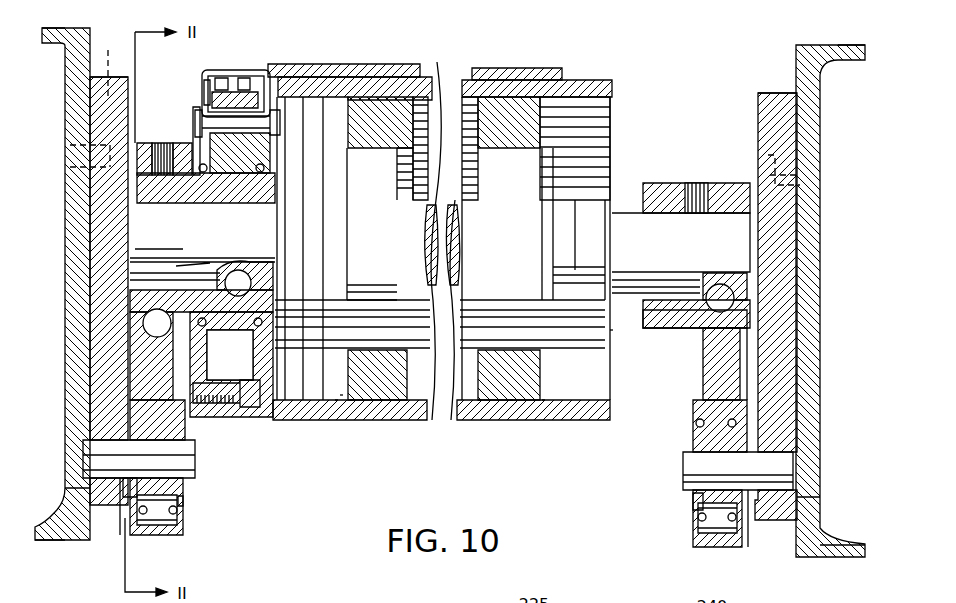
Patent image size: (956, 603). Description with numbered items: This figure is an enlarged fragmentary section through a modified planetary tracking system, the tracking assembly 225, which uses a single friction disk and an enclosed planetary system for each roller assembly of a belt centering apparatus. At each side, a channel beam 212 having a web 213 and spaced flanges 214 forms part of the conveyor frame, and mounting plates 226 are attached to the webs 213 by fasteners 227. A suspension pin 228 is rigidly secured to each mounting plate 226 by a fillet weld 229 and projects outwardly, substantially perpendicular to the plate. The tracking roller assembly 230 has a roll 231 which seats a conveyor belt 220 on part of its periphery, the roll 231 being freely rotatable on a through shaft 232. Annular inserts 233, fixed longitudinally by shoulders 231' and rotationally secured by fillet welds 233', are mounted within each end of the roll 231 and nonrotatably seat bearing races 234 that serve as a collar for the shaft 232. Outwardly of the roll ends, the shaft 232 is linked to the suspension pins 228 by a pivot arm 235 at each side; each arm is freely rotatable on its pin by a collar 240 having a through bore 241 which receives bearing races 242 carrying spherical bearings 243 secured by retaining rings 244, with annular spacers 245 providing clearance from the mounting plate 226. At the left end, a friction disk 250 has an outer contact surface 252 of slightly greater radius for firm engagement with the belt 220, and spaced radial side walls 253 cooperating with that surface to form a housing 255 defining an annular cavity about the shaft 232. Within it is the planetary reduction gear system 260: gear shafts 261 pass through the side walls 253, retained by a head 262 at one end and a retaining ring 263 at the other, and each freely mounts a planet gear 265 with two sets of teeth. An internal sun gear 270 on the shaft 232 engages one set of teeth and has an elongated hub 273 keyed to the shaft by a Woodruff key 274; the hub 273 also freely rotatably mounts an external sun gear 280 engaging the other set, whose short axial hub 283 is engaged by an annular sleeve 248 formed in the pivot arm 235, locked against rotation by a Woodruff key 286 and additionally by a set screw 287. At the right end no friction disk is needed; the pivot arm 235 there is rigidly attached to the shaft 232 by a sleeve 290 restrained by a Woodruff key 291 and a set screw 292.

The channel beam 212 is at (58, 30).
The web 213 is at (84, 278).
The flanges 214 is at (55, 40).
The conveyor belt 220 is at (372, 70).
The tracking assembly 225 is at (661, 98).
The mounting plate 226 is at (120, 80).
The fasteners 227 is at (768, 158).
The suspension pin 228 is at (196, 460).
The fillet weld 229 is at (80, 535).
The tracking roller assembly 230 is at (304, 46).
The roll 231 is at (534, 225).
The shoulders 231' is at (418, 428).
The through shaft 232 is at (440, 90).
The annular inserts 233 is at (431, 436).
The fillet welds 233' is at (450, 442).
The bearing races 234 is at (575, 340).
The pivot arm 235 is at (150, 360).
The collar 240 is at (173, 538).
The through bore 241 is at (162, 520).
The bearing races 242 is at (177, 515).
The spherical bearings 243 is at (130, 520).
The retaining rings 244 is at (185, 500).
The annular spacers 245 is at (121, 488).
The annular sleeve 248 is at (172, 197).
The friction disk 250 is at (222, 70).
The outer contact surface 252 is at (205, 85).
The radial side walls 253 is at (274, 364).
The housing 255 is at (230, 410).
The planetary reduction gear system 260 is at (196, 140).
The gear shaft 261 is at (200, 100).
The head 262 is at (282, 114).
The retaining ring 263 is at (300, 72).
The planet gear 265 is at (206, 76).
The internal sun gear 270 is at (280, 195).
The elongated hub 273 is at (440, 248).
The Woodruff key 274 is at (243, 290).
The external sun gear 280 is at (215, 178).
The axial hub 283 is at (175, 260).
The Woodruff key 286 is at (202, 268).
The set screw 287 is at (150, 157).
The sleeve 290 is at (690, 330).
The Woodruff key 291 is at (700, 300).
The set screw 292 is at (688, 215).